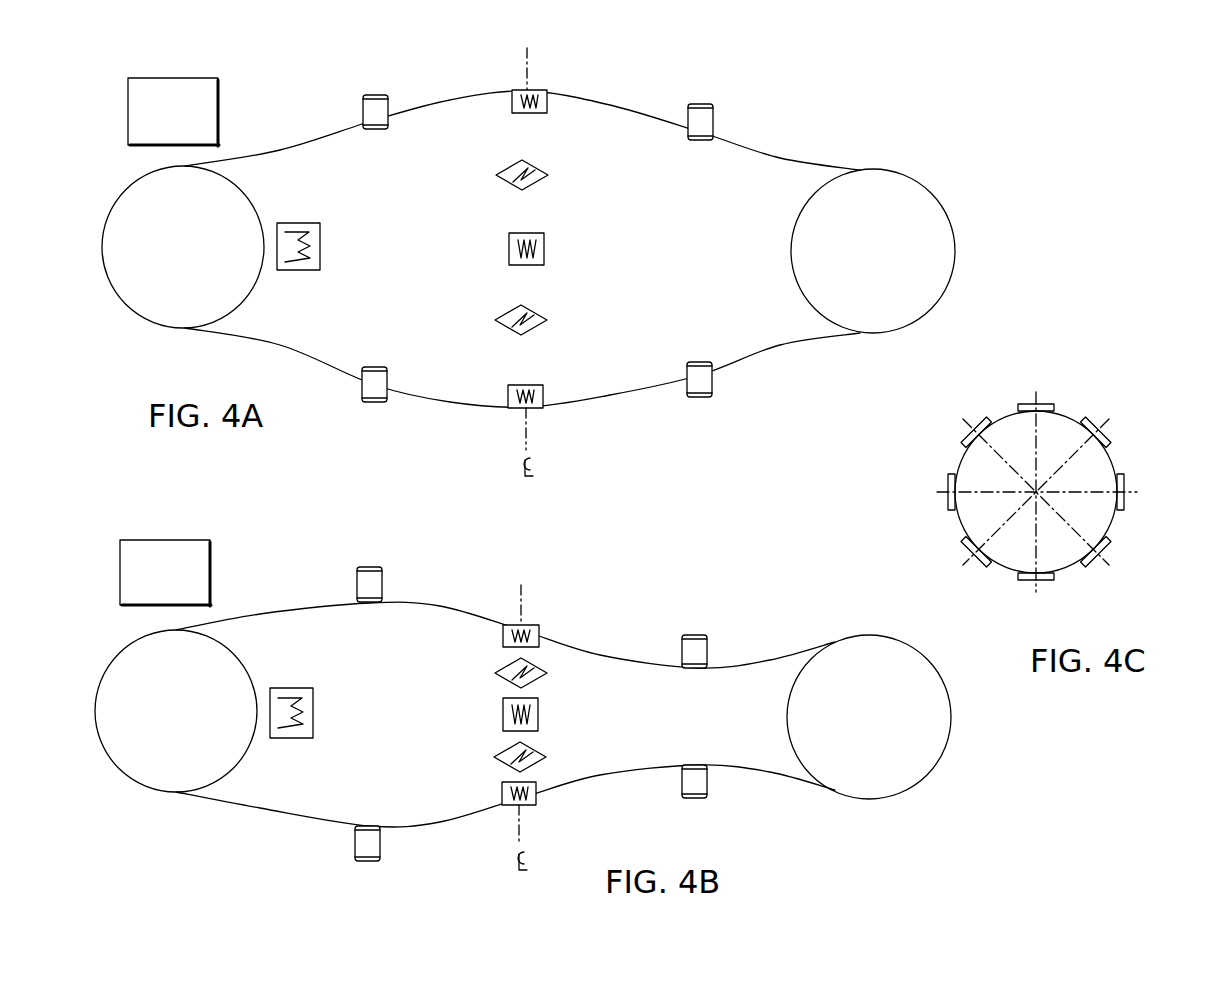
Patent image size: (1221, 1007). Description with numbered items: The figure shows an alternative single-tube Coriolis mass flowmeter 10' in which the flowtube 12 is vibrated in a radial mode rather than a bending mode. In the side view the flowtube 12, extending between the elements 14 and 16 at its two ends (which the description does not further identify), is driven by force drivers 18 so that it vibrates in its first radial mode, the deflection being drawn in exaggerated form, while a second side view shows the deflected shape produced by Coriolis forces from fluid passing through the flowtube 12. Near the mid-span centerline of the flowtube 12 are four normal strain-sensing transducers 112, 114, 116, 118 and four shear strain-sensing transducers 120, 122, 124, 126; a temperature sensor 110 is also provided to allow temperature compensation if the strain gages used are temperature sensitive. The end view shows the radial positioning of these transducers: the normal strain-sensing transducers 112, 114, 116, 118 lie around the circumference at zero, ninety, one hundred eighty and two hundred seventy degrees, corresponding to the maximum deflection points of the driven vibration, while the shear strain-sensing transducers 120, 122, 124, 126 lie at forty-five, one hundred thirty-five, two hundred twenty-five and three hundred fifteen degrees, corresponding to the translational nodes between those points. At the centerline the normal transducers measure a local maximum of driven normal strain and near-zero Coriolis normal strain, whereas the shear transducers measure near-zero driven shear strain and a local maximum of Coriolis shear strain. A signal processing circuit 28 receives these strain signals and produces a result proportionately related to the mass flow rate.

In FIG. 4A, the Coriolis mass flowmeter 10' is at (868, 100).
In FIG. 4B, the Coriolis mass flowmeter 10' is at (810, 583).
In FIG. 4A, the flowtube 12 is at (813, 167).
In FIG. 4B, the flowtube 12 is at (775, 660).
In FIG. 4C, the flowtube 12 is at (1068, 418).
In FIG. 4A, the first roller 14 is at (180, 329).
In FIG. 4B, the first roller 14 is at (163, 795).
In FIG. 4A, the second roller 16 is at (862, 334).
In FIG. 4B, the second roller 16 is at (848, 798).
In FIG. 4A, the force drivers 18 is at (363, 106).
In FIG. 4B, the force drivers 18 is at (357, 583).
In FIG. 4A, the signal processing circuit 28 is at (173, 112).
In FIG. 4B, the signal processing circuit 28 is at (165, 573).
In FIG. 4A, the temperature sensor 110 is at (322, 242).
In FIG. 4B, the temperature sensor 110 is at (315, 710).
In FIG. 4A, the normal strain-sensing transducer 112 is at (546, 245).
In FIG. 4B, the normal strain-sensing transducer 112 is at (539, 712).
In FIG. 4C, the normal strain-sensing transducer 112 is at (950, 500).
In FIG. 4A, the normal strain-sensing transducer 114 is at (547, 106).
In FIG. 4B, the normal strain-sensing transducer 114 is at (503, 636).
In FIG. 4C, the normal strain-sensing transducer 114 is at (1030, 404).
In FIG. 4C, the normal strain-sensing transducer 116 is at (1124, 487).
In FIG. 4A, the normal strain-sensing transducer 118 is at (543, 388).
In FIG. 4B, the normal strain-sensing transducer 118 is at (502, 793).
In FIG. 4C, the normal strain-sensing transducer 118 is at (1050, 578).
In FIG. 4A, the shear strain-sensing transducer 120 is at (546, 318).
In FIG. 4B, the shear strain-sensing transducer 120 is at (545, 753).
In FIG. 4C, the shear strain-sensing transducer 120 is at (980, 560).
In FIG. 4A, the shear strain-sensing transducer 122 is at (545, 173).
In FIG. 4B, the shear strain-sensing transducer 122 is at (545, 670).
In FIG. 4C, the shear strain-sensing transducer 122 is at (986, 426).
In FIG. 4C, the shear strain-sensing transducer 124 is at (1102, 437).
In FIG. 4C, the shear strain-sensing transducer 126 is at (1108, 540).